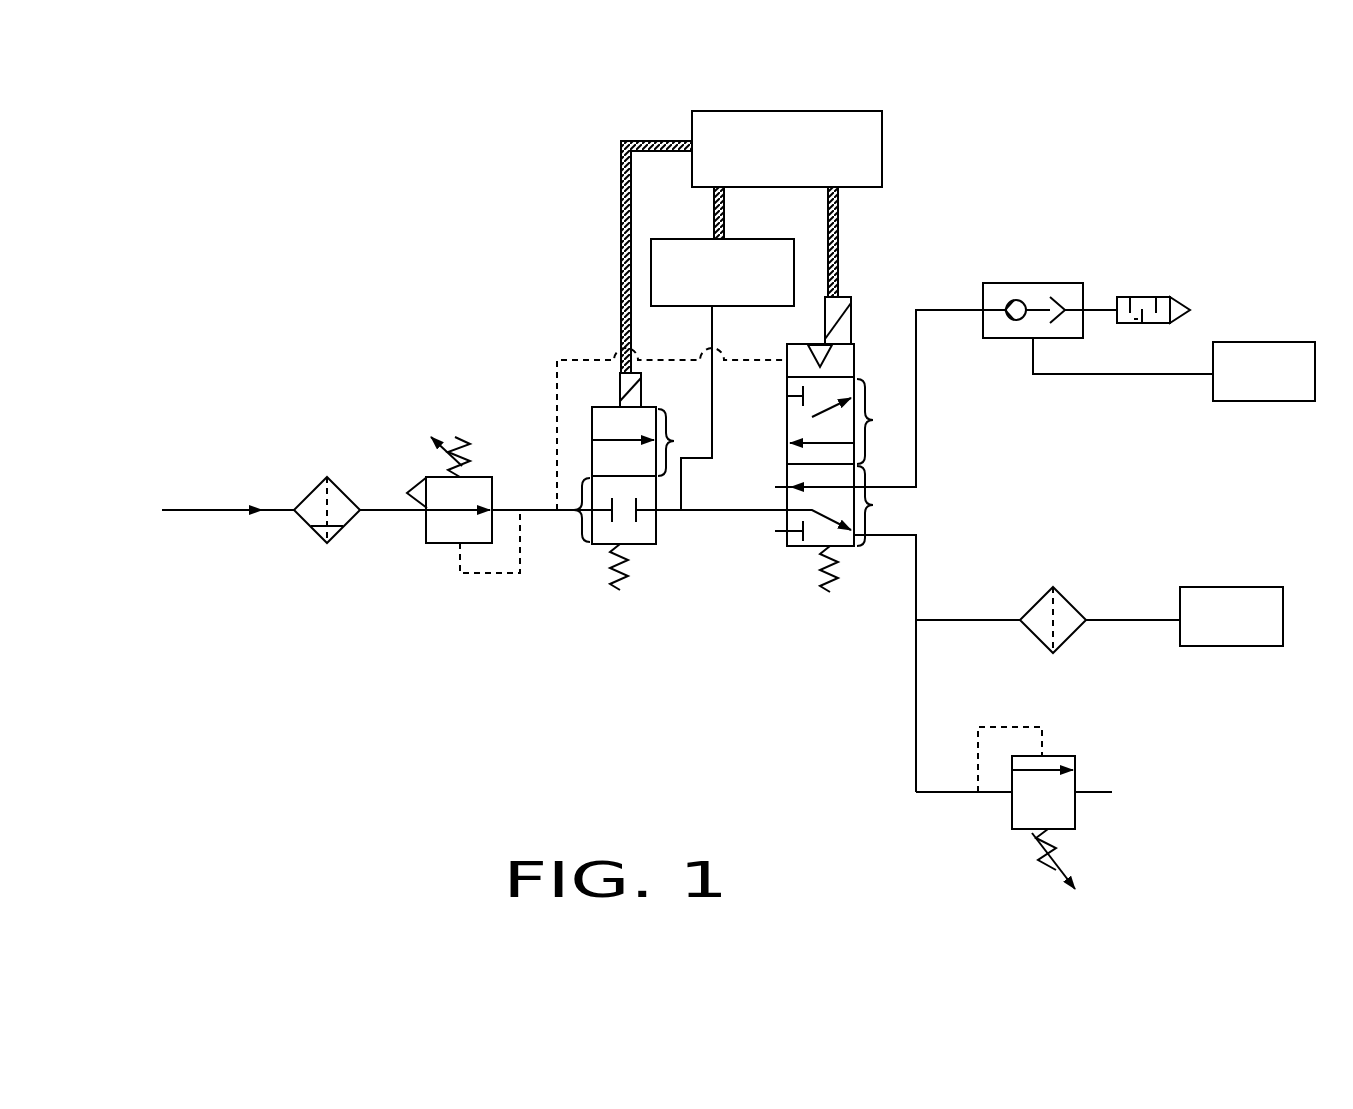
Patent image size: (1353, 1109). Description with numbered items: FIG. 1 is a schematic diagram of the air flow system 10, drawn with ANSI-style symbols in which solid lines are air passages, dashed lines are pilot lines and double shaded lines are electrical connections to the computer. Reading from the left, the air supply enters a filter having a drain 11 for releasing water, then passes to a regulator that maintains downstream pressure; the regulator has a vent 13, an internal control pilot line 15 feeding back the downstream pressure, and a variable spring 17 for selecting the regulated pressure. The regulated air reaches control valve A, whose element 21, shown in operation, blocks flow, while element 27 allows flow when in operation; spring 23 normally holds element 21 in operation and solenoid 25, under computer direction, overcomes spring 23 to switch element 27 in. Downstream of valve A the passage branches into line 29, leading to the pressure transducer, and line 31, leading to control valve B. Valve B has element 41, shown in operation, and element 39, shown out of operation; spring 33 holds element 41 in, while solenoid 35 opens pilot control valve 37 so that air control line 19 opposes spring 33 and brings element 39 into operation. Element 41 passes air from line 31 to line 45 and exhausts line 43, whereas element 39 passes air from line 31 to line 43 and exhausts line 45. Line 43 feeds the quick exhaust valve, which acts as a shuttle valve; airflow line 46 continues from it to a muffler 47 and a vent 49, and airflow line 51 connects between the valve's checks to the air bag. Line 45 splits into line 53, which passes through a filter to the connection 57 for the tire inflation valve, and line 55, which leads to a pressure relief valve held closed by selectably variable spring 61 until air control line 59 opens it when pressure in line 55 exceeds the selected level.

The flow system 10 is at (433, 252).
The drain 11 is at (320, 538).
The vent 13 is at (410, 493).
The internal control pilot line 15 is at (496, 580).
The variable spring 17 is at (466, 443).
The air control line 19 is at (556, 398).
The element 21 is at (600, 510).
The spring 23 is at (606, 561).
The solenoid 25 is at (617, 386).
The element 27 is at (647, 442).
The line 29 is at (700, 387).
The line 31 is at (682, 513).
The spring 33 is at (808, 572).
The solenoid 35 is at (854, 301).
The pilot control valve 37 is at (858, 353).
The element 39 is at (845, 421).
The element 41 is at (843, 506).
The line 43 is at (919, 396).
The line 45 is at (919, 572).
The airflow line 46 is at (1095, 311).
The muffler 47 is at (1144, 297).
The vent 49 is at (1191, 308).
The airflow line 51 is at (1116, 378).
The line 53 is at (985, 616).
The line 55 is at (911, 672).
The connection 57 is at (1120, 625).
The air control line 59 is at (974, 753).
The selectably variable spring 61 is at (1033, 838).